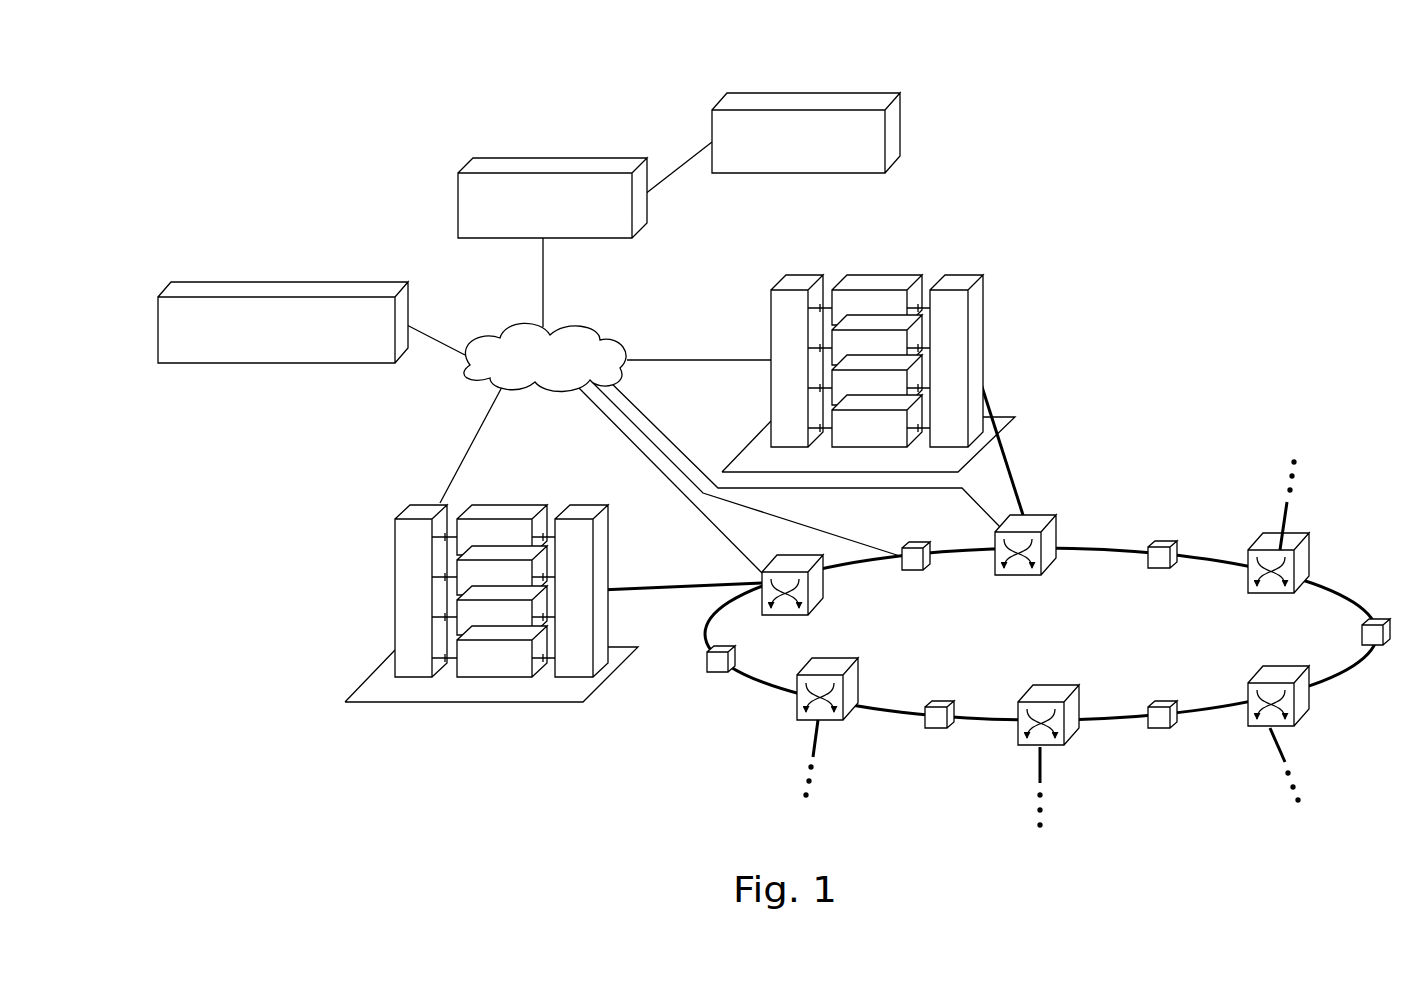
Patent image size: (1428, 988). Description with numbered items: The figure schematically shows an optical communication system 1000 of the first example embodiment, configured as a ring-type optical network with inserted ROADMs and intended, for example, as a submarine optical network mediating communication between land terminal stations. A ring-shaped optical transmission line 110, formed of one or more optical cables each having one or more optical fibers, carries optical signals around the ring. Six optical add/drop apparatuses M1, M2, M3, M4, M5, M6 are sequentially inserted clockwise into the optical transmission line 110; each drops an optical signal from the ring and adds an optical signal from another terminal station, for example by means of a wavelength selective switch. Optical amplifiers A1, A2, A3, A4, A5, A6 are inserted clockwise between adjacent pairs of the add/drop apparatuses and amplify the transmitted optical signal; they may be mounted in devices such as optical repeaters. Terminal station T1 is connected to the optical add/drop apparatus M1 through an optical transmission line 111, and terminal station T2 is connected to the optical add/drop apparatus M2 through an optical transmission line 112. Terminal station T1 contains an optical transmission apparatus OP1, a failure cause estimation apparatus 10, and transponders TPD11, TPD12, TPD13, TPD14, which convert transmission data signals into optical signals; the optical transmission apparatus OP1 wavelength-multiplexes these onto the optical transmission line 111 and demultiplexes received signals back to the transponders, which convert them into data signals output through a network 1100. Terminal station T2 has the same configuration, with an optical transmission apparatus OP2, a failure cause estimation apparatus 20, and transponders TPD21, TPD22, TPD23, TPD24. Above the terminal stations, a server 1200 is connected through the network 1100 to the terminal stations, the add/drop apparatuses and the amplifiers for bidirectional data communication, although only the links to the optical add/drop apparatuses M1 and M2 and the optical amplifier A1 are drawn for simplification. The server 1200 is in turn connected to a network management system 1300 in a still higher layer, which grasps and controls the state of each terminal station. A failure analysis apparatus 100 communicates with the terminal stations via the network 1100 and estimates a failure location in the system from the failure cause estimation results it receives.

The optical communication system 1000 is at (1210, 110).
The failure analysis apparatus 100 is at (207, 365).
The network 1100 is at (602, 304).
The server 1200 is at (578, 163).
The network management system (NMS) 1300 is at (890, 172).
The failure cause estimation apparatus 10 is at (400, 537).
The failure cause estimation apparatus 20 is at (771, 306).
The optical transmission apparatus OP1 is at (603, 535).
The optical transmission apparatus OP2 is at (978, 305).
The terminal station T1 is at (355, 705).
The terminal station T2 is at (750, 460).
The transponder TPD11 is at (493, 530).
The transponder TPD12 is at (493, 570).
The transponder TPD13 is at (493, 610).
The transponder TPD14 is at (493, 651).
The transponder TPD21 is at (869, 300).
The transponder TPD22 is at (869, 340).
The transponder TPD23 is at (869, 380).
The transponder TPD24 is at (869, 421).
The optical transmission line 110 is at (987, 725).
The optical transmission line 111 is at (678, 593).
The optical transmission line 112 is at (1000, 440).
The optical add/drop apparatus (ROADM) M1 is at (813, 597).
The optical add/drop apparatus (ROADM) M2 is at (1047, 520).
The optical add/drop apparatus (ROADM) M3 is at (1307, 532).
The optical add/drop apparatus (ROADM) M4 is at (1280, 675).
The optical add/drop apparatus (ROADM) M5 is at (1050, 693).
The optical add/drop apparatus (ROADM) M6 is at (837, 722).
The optical amplifier A1 is at (913, 570).
The optical amplifier A2 is at (1167, 540).
The optical amplifier A3 is at (1378, 620).
The optical amplifier A4 is at (1167, 703).
The optical amplifier A5 is at (938, 707).
The optical amplifier A6 is at (713, 673).